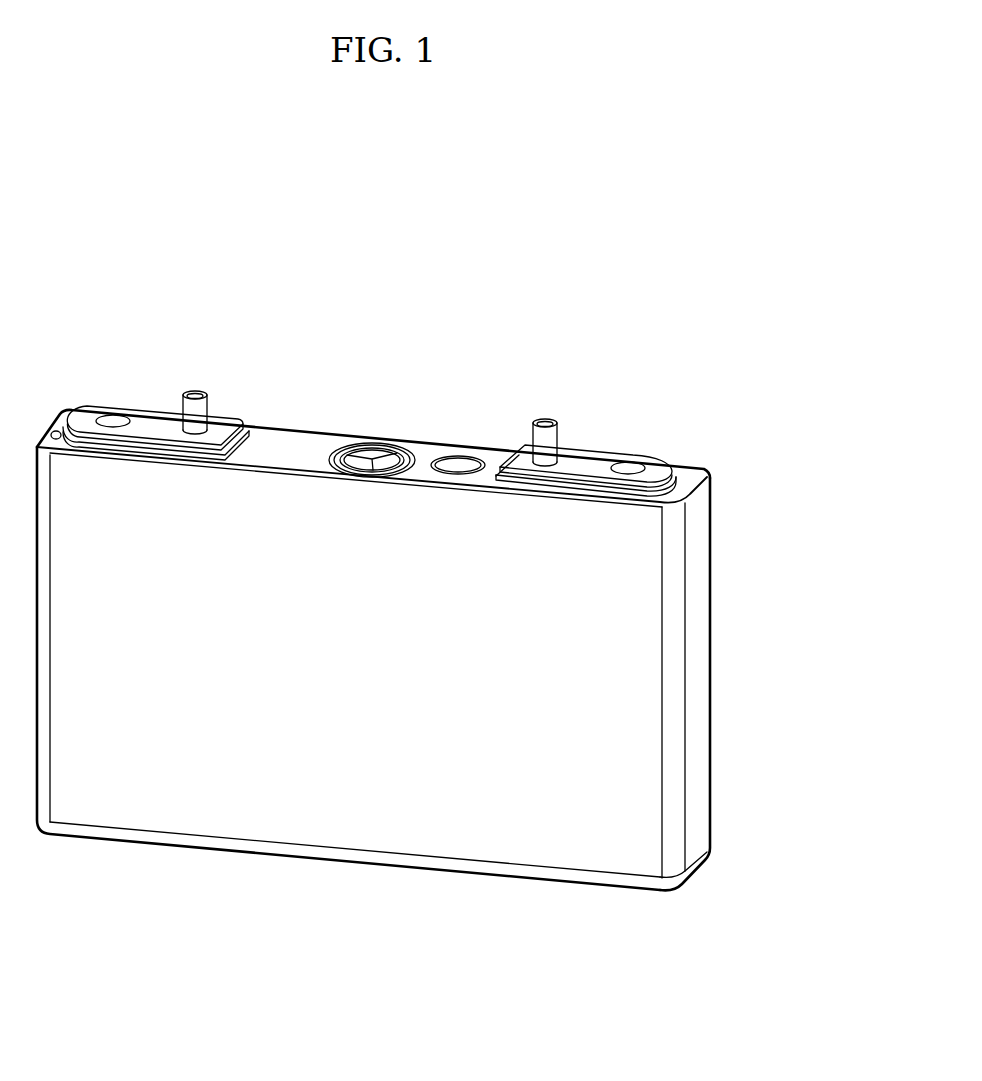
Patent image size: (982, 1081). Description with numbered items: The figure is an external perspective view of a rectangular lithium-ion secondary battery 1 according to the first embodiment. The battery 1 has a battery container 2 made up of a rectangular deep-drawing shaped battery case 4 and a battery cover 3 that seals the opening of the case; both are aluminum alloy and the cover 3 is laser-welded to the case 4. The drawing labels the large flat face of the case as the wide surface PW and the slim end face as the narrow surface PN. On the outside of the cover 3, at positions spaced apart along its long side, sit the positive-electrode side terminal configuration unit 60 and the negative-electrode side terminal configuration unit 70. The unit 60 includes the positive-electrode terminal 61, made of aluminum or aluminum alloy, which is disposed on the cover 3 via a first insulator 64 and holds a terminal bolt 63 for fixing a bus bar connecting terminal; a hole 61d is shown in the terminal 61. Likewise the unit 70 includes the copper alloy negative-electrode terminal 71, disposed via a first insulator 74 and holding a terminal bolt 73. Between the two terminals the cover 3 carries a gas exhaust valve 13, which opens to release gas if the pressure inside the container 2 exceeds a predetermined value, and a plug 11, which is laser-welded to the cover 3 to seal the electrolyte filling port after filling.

The lithium-ion secondary battery 1 is at (567, 297).
The battery container 2 is at (273, 325).
The battery cover 3 is at (283, 427).
The battery case 4 is at (322, 499).
The plug 11 is at (455, 458).
The gas exhaust valve 13 is at (373, 443).
The positive-electrode side terminal configuration unit 60 is at (137, 353).
The positive-electrode terminal 61 is at (159, 403).
The hole of terminal plate 61d is at (104, 415).
The terminal bolt 63 is at (197, 396).
The first insulator 64 is at (243, 417).
The negative-electrode side terminal configuration unit 70 is at (643, 403).
The negative-electrode terminal 71 is at (588, 447).
The terminal bolt 73 is at (545, 422).
The first insulator 74 is at (672, 466).
The narrow side surface PN is at (693, 693).
The wide side surface PW is at (362, 775).